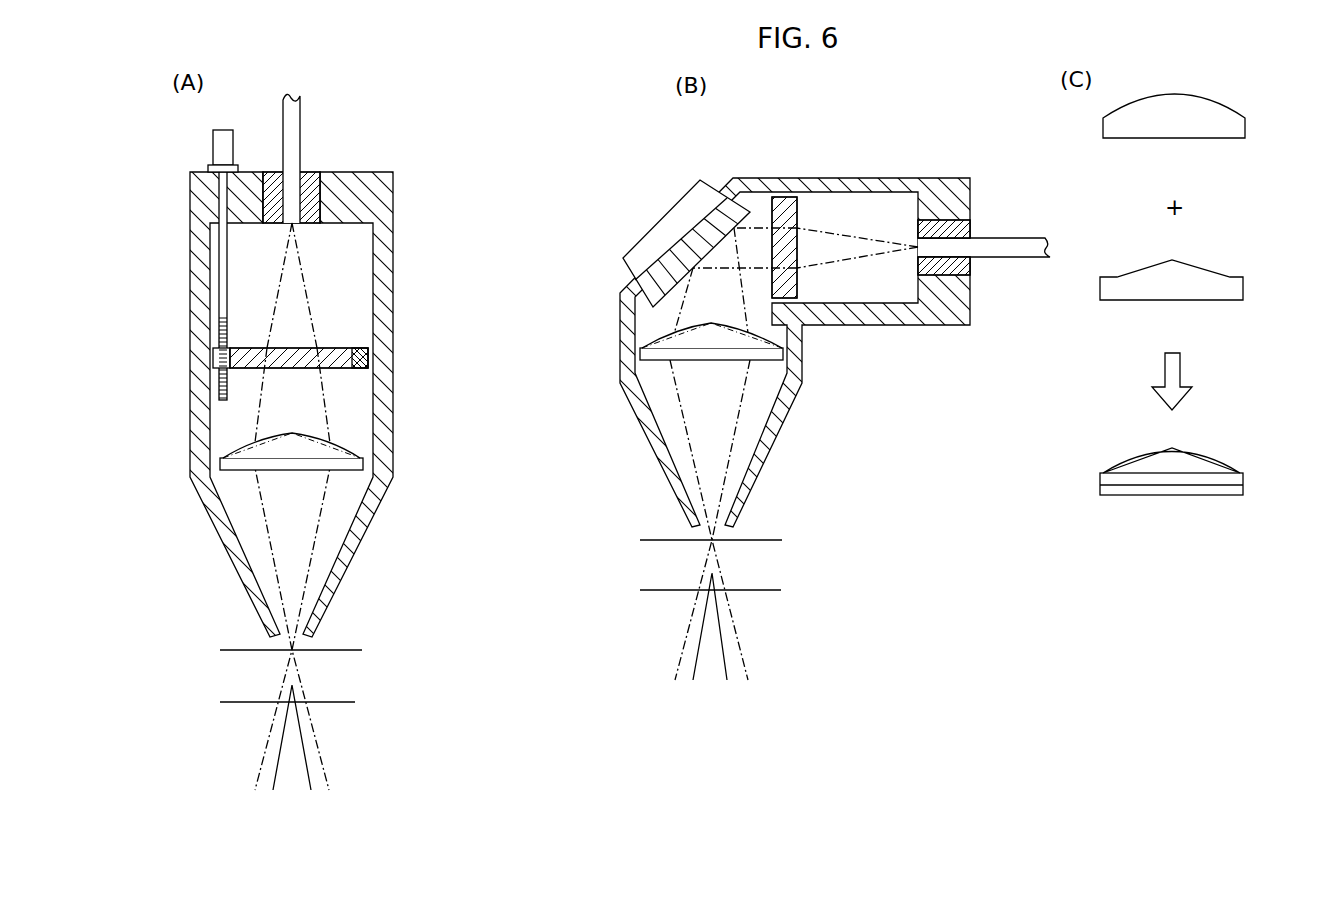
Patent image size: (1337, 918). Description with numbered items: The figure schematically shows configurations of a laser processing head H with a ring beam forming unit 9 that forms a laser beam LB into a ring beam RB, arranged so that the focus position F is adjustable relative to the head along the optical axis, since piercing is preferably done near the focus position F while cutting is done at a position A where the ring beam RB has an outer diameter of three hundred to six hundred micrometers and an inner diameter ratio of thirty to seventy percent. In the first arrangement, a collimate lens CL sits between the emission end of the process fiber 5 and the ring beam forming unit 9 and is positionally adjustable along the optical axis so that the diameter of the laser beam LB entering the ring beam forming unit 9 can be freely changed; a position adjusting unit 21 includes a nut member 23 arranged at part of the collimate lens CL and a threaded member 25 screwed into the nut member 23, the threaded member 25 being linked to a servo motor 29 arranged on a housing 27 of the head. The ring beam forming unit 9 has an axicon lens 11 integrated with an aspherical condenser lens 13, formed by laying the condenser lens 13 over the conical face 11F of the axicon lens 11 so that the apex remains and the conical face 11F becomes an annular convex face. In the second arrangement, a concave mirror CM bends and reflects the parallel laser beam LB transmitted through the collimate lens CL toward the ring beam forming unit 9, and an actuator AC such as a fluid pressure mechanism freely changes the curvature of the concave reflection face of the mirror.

The process fiber 5 is at (300, 130).
The ring beam forming unit 9 is at (764, 325).
The axicon lens 11 is at (344, 471).
The conical face 11F is at (1195, 263).
The condenser lens 13 is at (333, 443).
The position adjusting unit 21 is at (217, 329).
The nut member 23 is at (214, 352).
The threaded member 25 is at (222, 381).
The housing 27 is at (192, 284).
The servo motor 29 is at (218, 150).
The collimate lens CL is at (372, 358).
The concave mirror CM is at (743, 204).
The actuator AC is at (670, 223).
The laser processing head H is at (395, 300).
The laser beam LB is at (318, 546).
The ring beam RB is at (312, 728).
The focus position F is at (292, 650).
The position A is at (509, 646).